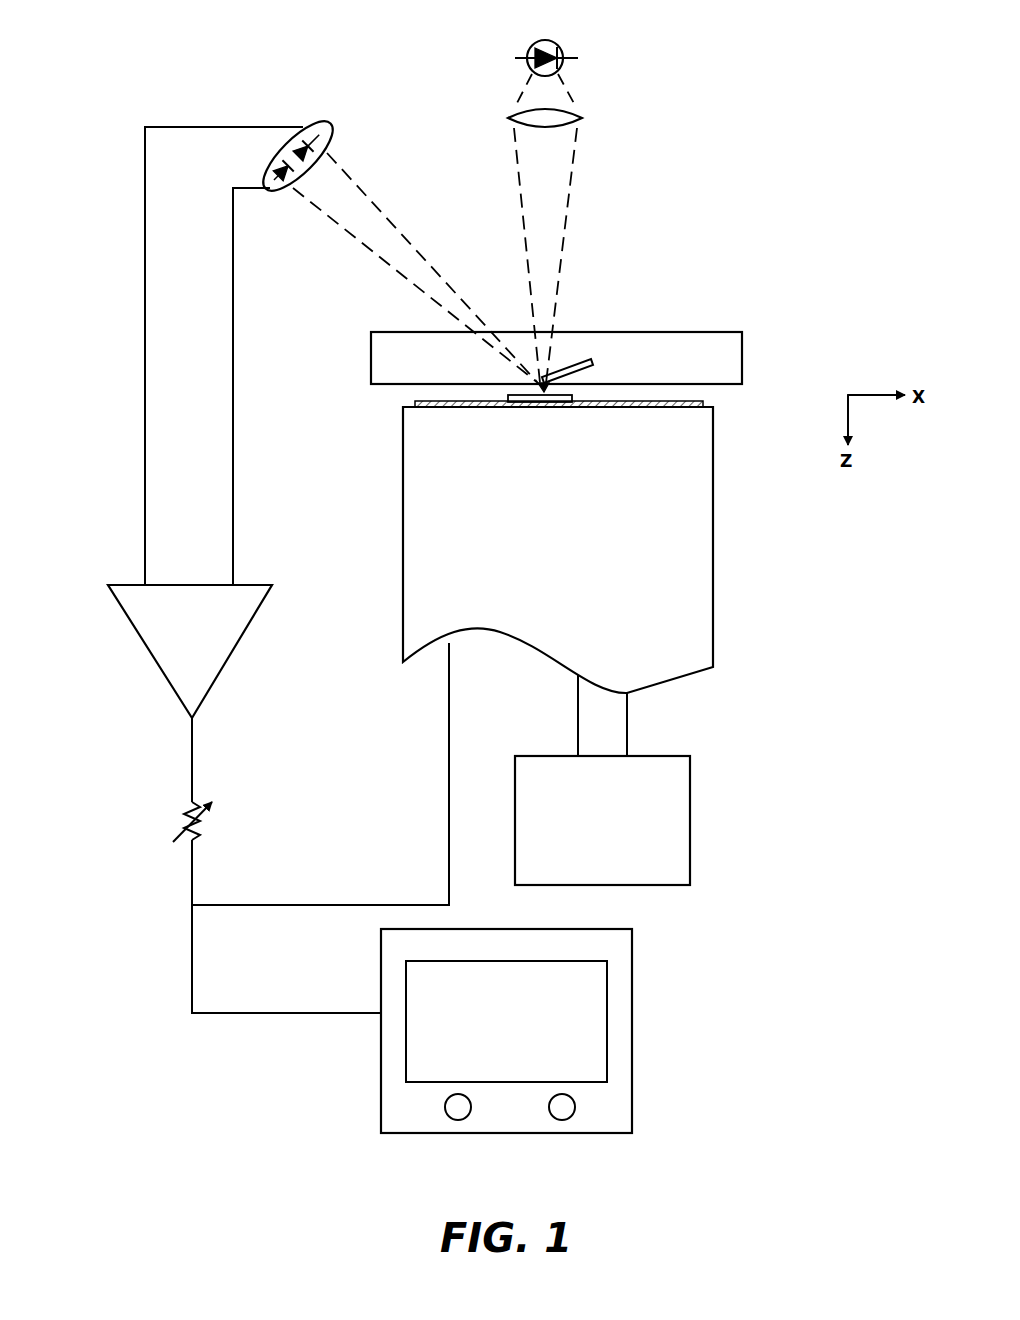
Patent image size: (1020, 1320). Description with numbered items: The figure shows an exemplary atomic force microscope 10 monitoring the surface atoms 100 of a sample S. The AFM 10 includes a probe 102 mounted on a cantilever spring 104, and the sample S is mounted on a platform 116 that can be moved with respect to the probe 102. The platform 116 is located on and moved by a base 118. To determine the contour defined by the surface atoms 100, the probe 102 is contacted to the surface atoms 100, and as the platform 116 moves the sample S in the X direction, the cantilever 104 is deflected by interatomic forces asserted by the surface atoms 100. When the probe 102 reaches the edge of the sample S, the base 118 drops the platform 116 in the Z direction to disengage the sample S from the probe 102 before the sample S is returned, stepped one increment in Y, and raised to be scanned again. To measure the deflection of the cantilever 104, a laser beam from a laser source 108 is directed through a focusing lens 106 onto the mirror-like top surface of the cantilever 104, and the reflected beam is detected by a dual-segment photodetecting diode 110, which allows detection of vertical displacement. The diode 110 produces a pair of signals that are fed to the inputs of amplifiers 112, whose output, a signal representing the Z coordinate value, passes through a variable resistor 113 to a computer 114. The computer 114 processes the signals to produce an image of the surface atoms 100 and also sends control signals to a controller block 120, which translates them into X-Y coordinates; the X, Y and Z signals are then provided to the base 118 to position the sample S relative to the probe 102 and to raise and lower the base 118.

The atomic force microscope 10 is at (122, 72).
The surface atoms 100 is at (502, 393).
The probe 102 is at (545, 403).
The cantilever spring 104 is at (579, 360).
The focusing lens 106 is at (580, 112).
The laser source 108 is at (560, 42).
The dual-segment photodetecting diode 110 is at (303, 125).
The amplifiers 112 is at (238, 645).
The variable resistor 113 is at (202, 815).
The computer 114 is at (563, 1133).
The platform 116 is at (566, 410).
The base 118 is at (713, 560).
The controller block 120 is at (690, 797).
The sample S is at (579, 404).